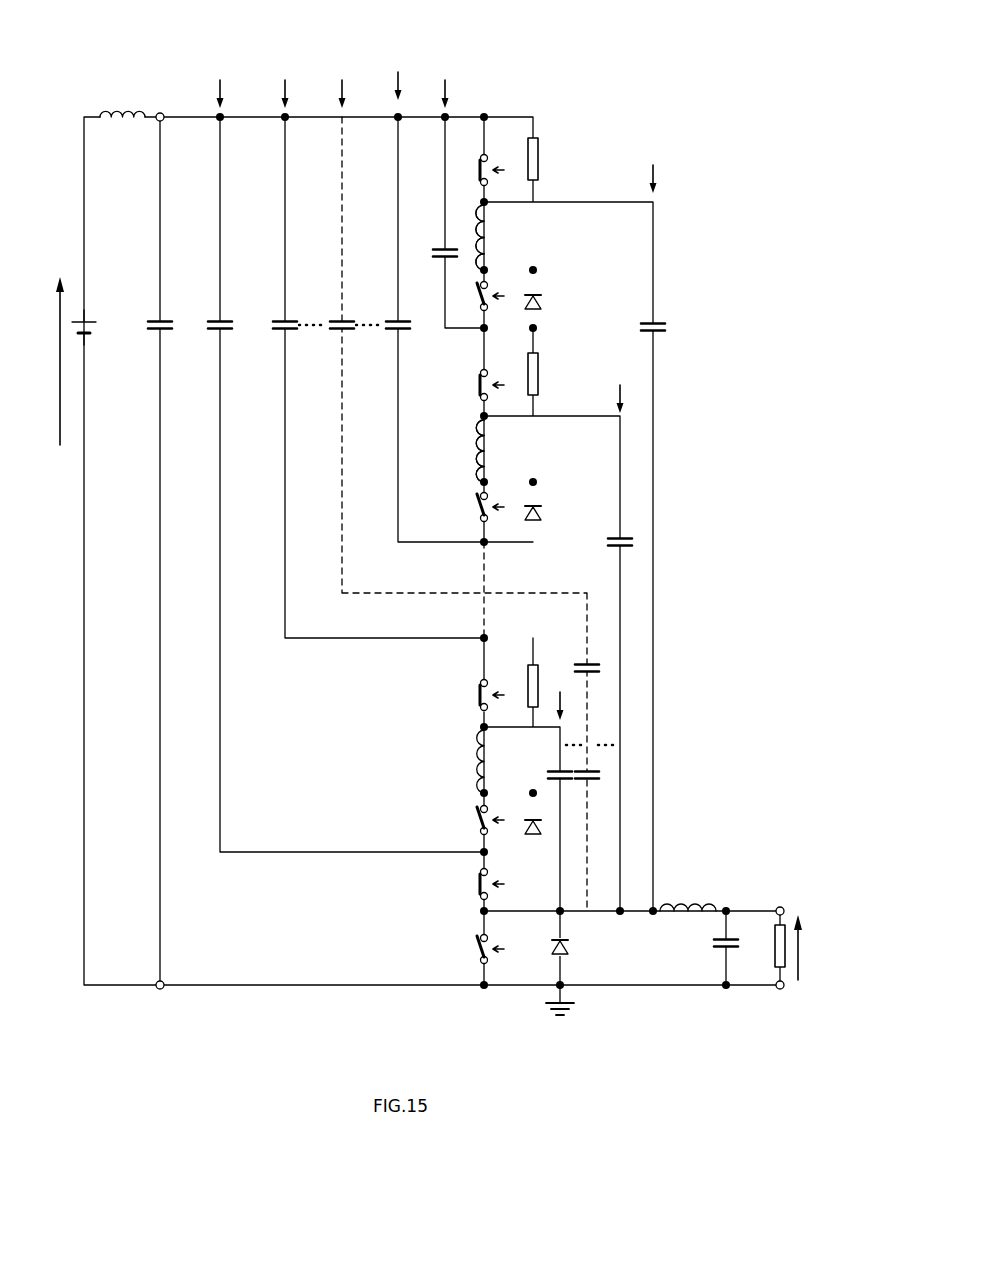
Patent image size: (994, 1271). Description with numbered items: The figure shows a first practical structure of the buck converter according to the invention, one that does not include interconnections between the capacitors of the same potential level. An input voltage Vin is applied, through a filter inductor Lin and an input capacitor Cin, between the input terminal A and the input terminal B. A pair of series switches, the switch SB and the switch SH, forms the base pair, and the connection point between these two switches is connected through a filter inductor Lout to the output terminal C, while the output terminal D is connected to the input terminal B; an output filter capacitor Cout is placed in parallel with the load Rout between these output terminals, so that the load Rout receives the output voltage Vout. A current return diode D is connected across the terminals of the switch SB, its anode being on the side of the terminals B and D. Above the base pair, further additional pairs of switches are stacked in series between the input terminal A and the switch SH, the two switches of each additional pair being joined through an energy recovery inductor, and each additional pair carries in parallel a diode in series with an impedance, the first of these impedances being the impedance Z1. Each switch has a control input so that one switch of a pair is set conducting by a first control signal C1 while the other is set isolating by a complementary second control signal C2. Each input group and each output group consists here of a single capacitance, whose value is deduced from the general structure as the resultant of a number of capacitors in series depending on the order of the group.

The filter inductor Lin is at (114, 112).
The input terminal A is at (160, 112).
The input terminal B is at (158, 990).
The input voltage Vin is at (75, 361).
The input capacitor Cin is at (155, 333).
The first control signal C1 is at (508, 525).
The second control signal C2 is at (508, 621).
The impedance Z1 is at (528, 678).
The switch SH is at (476, 886).
The switch SB is at (474, 943).
The current return diode / output terminal D is at (572, 944).
The filter inductor Lout is at (692, 903).
The output terminal C is at (780, 906).
The output filter capacitor Cout is at (713, 947).
The load Rout is at (775, 955).
The output voltage Vout is at (818, 947).